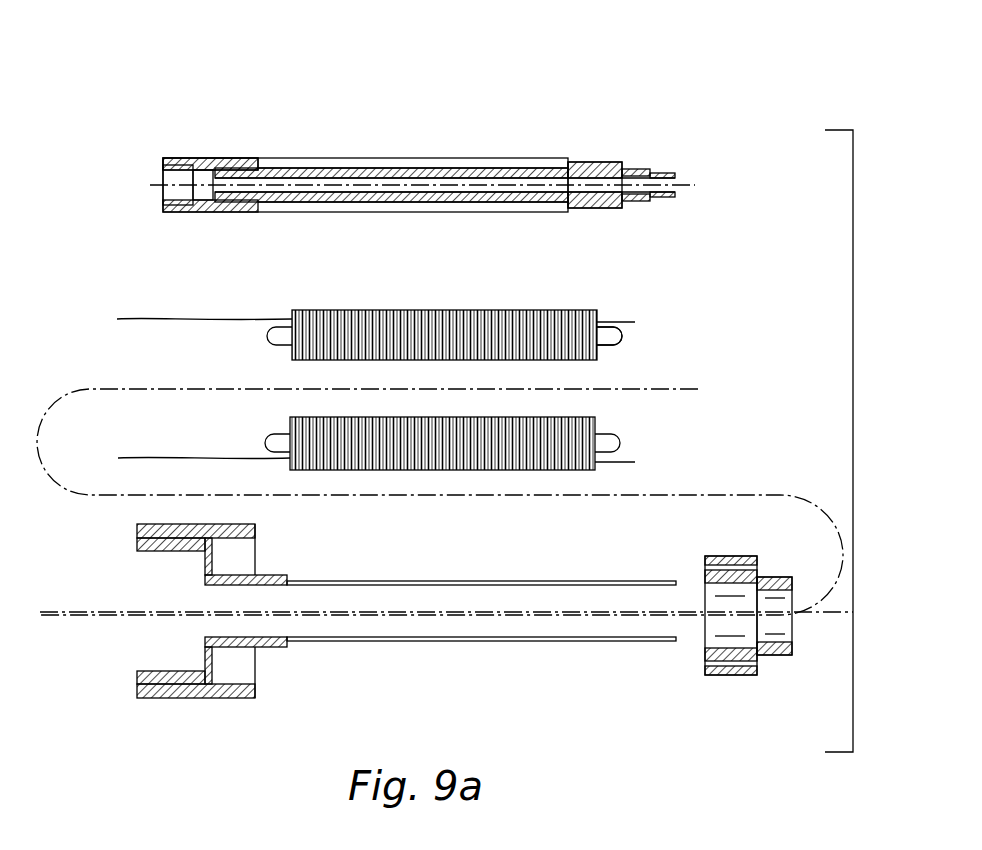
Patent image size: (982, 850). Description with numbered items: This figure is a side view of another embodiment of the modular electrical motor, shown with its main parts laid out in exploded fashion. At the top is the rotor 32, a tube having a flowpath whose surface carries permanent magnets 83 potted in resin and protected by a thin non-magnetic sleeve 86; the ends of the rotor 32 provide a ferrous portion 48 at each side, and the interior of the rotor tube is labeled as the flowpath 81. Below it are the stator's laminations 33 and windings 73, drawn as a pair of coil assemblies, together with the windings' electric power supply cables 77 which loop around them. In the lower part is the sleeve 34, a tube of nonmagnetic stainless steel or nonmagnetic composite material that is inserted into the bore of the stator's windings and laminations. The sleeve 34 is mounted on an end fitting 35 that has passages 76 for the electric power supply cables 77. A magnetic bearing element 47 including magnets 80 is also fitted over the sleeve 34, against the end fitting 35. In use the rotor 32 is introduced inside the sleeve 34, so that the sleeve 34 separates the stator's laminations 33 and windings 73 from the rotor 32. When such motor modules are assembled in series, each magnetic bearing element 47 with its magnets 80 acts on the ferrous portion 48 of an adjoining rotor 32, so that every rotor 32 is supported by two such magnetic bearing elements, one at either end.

The rotor 32 is at (412, 145).
The ferrous portion 48 is at (188, 140).
The inner bore wall 81 is at (292, 192).
The thin non-magnetic sleeve 86 is at (367, 207).
The permanent magnets 83 is at (494, 206).
The electric power supply cables 77 is at (176, 318).
The laminations 33 is at (567, 310).
The windings 73 is at (618, 345).
The passages 76 is at (150, 530).
The end fitting 35 is at (185, 688).
The sleeve 34 is at (545, 640).
The magnets 80 is at (712, 668).
The magnetic bearing element 47 is at (738, 678).